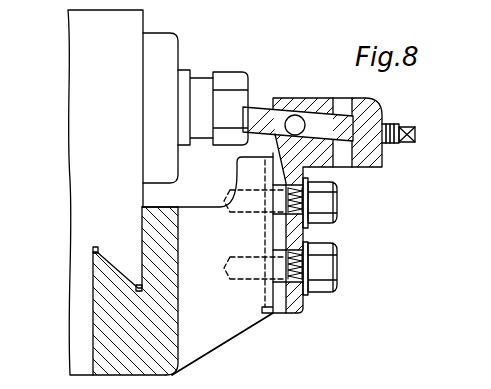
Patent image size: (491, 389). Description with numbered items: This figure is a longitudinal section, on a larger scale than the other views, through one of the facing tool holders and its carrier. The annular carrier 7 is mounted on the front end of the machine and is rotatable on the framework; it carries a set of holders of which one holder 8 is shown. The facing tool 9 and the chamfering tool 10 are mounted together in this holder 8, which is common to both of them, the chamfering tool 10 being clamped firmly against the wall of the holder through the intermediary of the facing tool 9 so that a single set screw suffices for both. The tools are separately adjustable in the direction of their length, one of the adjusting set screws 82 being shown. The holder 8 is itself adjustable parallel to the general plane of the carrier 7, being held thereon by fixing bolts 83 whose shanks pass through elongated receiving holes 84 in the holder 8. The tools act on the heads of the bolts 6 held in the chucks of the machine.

The bolt 6 is at (228, 80).
The annular carrier 7 is at (170, 340).
The holder 8 is at (292, 306).
The facing tool 9 is at (325, 122).
The chamfering tool 10 is at (250, 103).
The set screw 82 is at (415, 135).
The fixing bolt 83 is at (322, 267).
The elongated receiving hole 84 is at (298, 218).